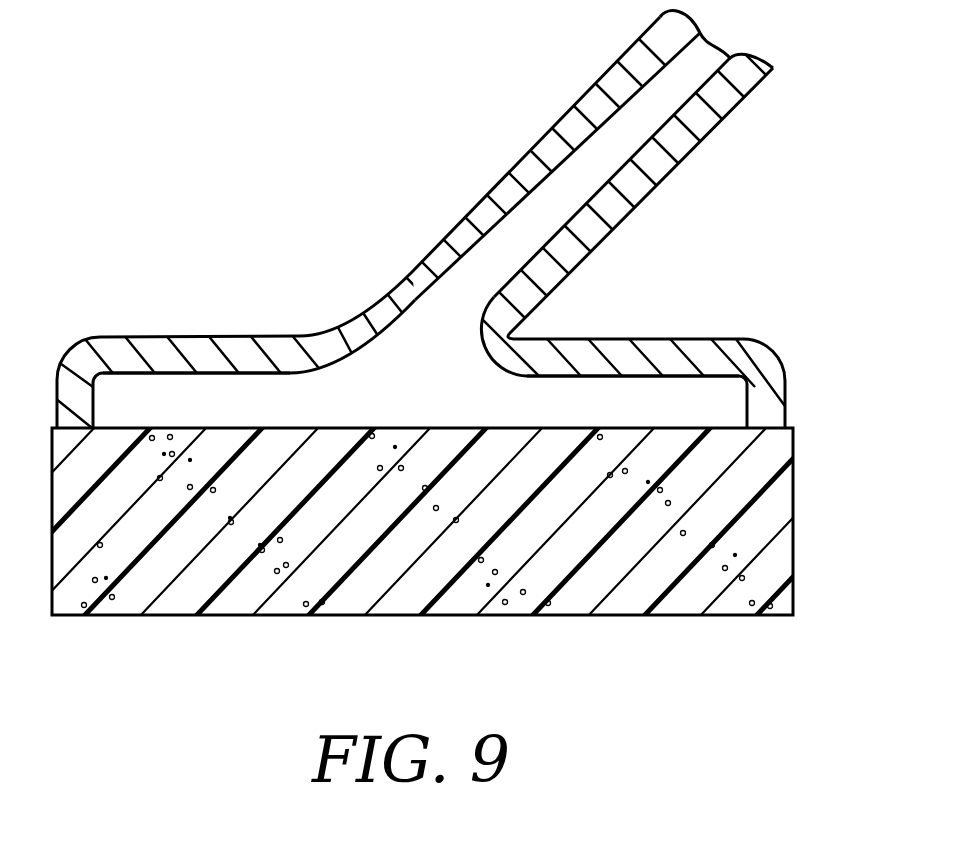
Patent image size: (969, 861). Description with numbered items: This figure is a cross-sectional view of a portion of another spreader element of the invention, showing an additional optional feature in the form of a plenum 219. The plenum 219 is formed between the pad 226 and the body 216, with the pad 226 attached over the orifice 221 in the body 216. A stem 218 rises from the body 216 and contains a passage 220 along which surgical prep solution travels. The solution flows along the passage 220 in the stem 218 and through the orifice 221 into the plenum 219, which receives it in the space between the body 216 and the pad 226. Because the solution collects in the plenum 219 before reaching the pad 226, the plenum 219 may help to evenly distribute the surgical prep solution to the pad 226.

The body 216 is at (696, 339).
The stem 218 is at (722, 118).
The plenum 219 is at (418, 416).
The passage 220 is at (592, 158).
The orifice 221 is at (438, 355).
The pad 226 is at (238, 595).